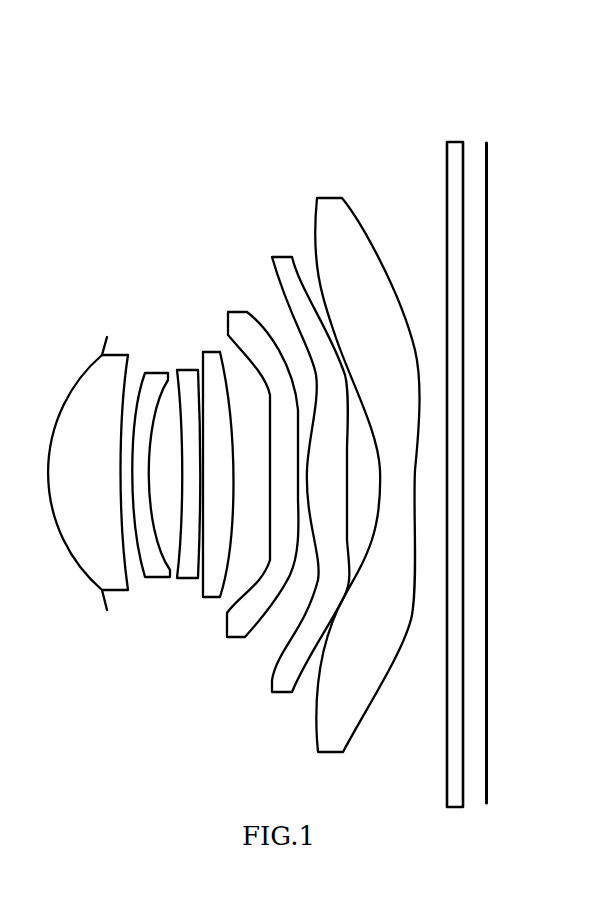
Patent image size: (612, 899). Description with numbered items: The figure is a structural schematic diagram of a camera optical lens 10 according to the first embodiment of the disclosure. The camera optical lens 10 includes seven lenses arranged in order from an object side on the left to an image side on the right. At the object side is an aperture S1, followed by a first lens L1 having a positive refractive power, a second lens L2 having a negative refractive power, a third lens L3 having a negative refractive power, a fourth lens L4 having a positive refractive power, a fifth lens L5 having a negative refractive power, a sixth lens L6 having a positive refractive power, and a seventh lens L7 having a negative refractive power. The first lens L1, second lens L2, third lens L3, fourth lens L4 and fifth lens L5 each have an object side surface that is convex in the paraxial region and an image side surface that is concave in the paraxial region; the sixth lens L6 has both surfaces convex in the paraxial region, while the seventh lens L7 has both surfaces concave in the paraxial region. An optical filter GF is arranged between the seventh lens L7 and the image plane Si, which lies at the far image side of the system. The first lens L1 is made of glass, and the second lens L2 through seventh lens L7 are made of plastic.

The camera optical lens 10 is at (287, 40).
The aperture S1 is at (91, 469).
The first lens L1 is at (91, 460).
The second lens L2 is at (151, 464).
The third lens L3 is at (185, 461).
The fourth lens L4 is at (215, 462).
The fifth lens L5 is at (260, 462).
The sixth lens L6 is at (308, 462).
The seventh lens L7 is at (367, 462).
The optical filter GF is at (451, 460).
The image plane Si is at (481, 458).